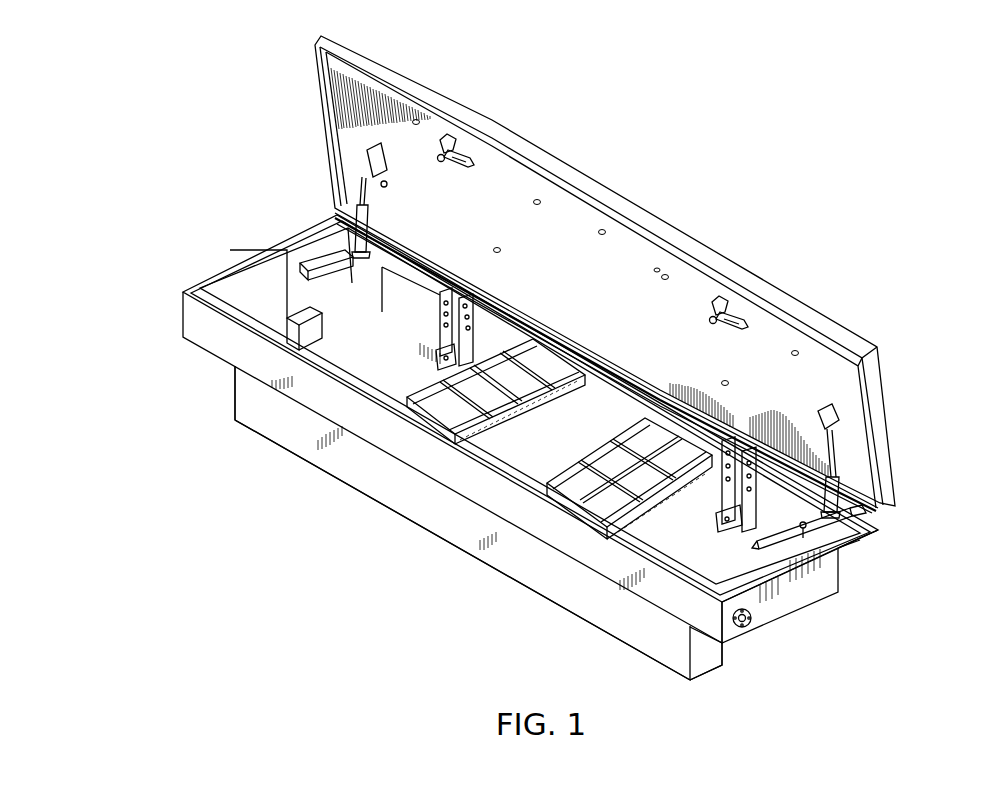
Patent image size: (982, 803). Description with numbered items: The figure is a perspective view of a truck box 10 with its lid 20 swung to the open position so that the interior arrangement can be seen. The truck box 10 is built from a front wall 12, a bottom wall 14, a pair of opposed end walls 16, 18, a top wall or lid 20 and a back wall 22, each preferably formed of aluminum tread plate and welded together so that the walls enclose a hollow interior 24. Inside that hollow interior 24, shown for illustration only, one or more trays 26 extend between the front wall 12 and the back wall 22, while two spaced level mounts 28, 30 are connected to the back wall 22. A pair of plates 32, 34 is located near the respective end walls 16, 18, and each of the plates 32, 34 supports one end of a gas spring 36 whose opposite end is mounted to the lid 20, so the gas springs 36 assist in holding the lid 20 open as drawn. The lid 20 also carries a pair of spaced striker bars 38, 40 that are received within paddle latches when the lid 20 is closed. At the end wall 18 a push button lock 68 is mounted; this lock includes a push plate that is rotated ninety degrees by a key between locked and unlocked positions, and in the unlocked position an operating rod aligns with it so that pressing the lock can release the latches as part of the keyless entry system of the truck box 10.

The truck box 10 is at (886, 153).
The front wall 12 is at (580, 600).
The bottom wall 14 is at (395, 507).
The end wall 16 is at (236, 389).
The end wall 18 is at (777, 624).
The lid 20 is at (622, 192).
The back wall 22 is at (833, 590).
The hollow interior 24 is at (386, 366).
The tray 26 is at (467, 408).
The level mount 28 is at (452, 274).
The level mount 30 is at (734, 448).
The plate 32 is at (322, 248).
The plate 34 is at (818, 533).
The gas spring 36 is at (362, 184).
The striker bar 38 is at (450, 147).
The striker bar 40 is at (722, 300).
The push button lock 68 is at (742, 627).